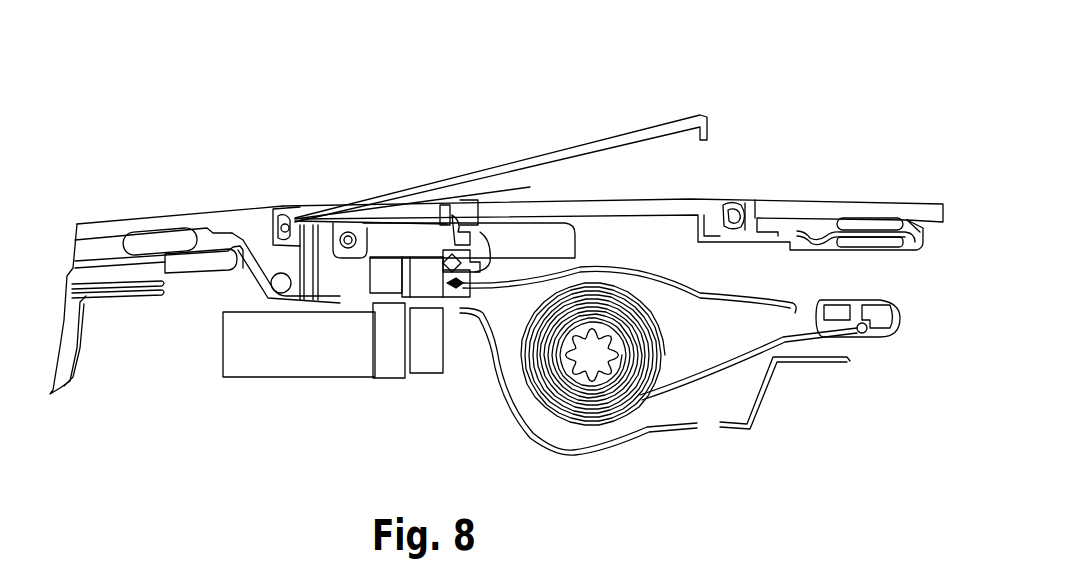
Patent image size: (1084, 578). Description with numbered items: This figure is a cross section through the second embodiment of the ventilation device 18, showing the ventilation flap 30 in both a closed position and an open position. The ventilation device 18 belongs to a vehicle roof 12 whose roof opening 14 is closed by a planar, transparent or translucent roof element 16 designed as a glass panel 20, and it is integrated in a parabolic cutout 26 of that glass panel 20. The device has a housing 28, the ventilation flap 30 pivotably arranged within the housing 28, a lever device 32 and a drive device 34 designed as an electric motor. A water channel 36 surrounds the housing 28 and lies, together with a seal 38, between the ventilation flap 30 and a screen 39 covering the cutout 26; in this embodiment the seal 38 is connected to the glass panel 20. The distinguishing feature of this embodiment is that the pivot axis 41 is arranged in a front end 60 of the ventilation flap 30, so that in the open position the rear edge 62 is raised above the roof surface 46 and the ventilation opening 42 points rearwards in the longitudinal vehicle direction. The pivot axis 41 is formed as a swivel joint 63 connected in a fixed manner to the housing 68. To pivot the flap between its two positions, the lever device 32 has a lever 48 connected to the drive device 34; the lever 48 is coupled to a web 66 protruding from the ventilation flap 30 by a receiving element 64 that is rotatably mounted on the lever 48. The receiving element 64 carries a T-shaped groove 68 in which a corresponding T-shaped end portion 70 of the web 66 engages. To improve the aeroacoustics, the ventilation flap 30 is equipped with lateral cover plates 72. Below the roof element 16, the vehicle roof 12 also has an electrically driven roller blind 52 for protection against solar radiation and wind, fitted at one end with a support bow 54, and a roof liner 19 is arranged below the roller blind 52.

The vehicle roof 12 is at (856, 160).
The roof opening 14 is at (878, 196).
The roof element 16 is at (792, 196).
The ventilation device 18 is at (628, 106).
The roof liner 19 is at (805, 376).
The glass panel 20 is at (936, 205).
The cutout 26 is at (338, 180).
The housing 28 is at (183, 277).
The ventilation flap 30 is at (623, 207).
The lever device 32 is at (487, 303).
The drive device 34 is at (258, 372).
The water channel 36 is at (256, 244).
The seal 38 is at (279, 208).
The screen 39 is at (105, 229).
The pivot axis 41 is at (355, 218).
The ventilation opening 42 is at (718, 162).
The roof surface 46 is at (832, 196).
The lever 48 is at (423, 267).
The roller blind 52 is at (588, 444).
The support bow 54 is at (880, 338).
The front end 60 is at (300, 255).
The rear edge 62 is at (702, 115).
The swivel joint 63 is at (349, 258).
The receiving element 64 is at (485, 228).
The web 66 is at (456, 215).
The T-shaped groove 68 is at (465, 212).
The T-shaped end portion 70 is at (440, 205).
The lateral cover plates 72 is at (562, 227).